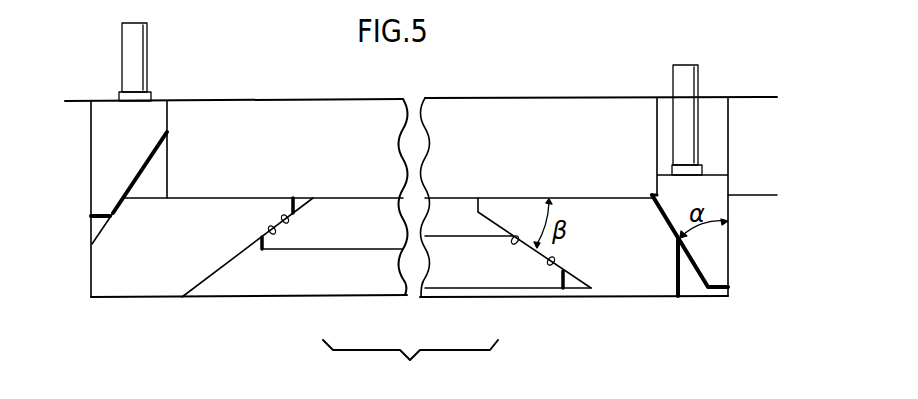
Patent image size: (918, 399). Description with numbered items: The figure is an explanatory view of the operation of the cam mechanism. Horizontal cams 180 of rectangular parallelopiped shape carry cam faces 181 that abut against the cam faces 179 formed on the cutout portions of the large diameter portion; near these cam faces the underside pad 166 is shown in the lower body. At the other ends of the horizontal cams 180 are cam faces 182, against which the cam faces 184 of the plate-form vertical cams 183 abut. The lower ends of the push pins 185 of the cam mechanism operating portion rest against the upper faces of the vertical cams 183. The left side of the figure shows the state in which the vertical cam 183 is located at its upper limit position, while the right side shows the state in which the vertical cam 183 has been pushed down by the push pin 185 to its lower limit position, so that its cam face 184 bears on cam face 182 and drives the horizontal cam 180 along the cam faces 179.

The underside pad 166 is at (368, 232).
The cam face 179 is at (292, 224).
The horizontal cam 180 is at (134, 277).
The cam face 181 is at (272, 227).
The cam face 182 is at (98, 230).
The vertical cam 183 is at (143, 118).
The cam face 184 is at (143, 172).
The push pin 185 is at (138, 50).